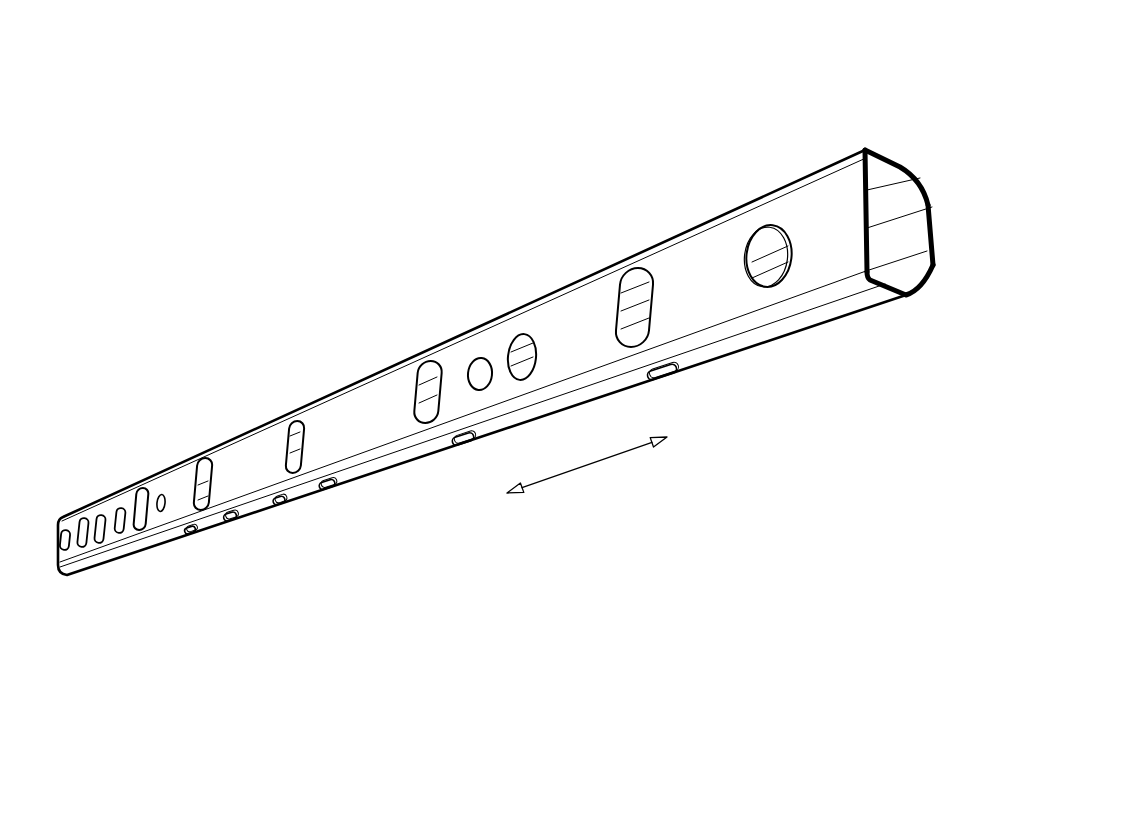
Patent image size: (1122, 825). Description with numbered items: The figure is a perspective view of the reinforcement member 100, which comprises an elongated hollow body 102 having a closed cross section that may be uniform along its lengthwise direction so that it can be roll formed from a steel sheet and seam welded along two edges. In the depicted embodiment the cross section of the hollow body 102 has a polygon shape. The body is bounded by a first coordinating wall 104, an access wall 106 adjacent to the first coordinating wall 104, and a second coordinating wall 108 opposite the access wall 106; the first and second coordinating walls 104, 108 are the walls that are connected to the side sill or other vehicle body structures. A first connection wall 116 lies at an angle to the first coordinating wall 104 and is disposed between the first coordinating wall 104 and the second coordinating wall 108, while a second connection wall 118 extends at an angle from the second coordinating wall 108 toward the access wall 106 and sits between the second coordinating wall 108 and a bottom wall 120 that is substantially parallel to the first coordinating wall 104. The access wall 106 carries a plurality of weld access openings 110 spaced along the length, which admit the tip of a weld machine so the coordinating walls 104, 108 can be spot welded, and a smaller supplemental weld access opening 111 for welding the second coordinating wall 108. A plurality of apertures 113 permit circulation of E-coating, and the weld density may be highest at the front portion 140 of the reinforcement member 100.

The reinforcement member 100 is at (796, 64).
The elongated hollow body 102 is at (138, 550).
The first coordinating wall 104 is at (877, 170).
The access wall 106 is at (693, 252).
The second coordinating wall 108 is at (915, 238).
The weld access openings 110 is at (634, 270).
The supplemental weld access opening 111 is at (770, 262).
The apertures 113 is at (460, 446).
The first connection wall 116 is at (920, 181).
The second connection wall 118 is at (925, 284).
The bottom wall 120 is at (812, 315).
The front portion 140 is at (107, 510).